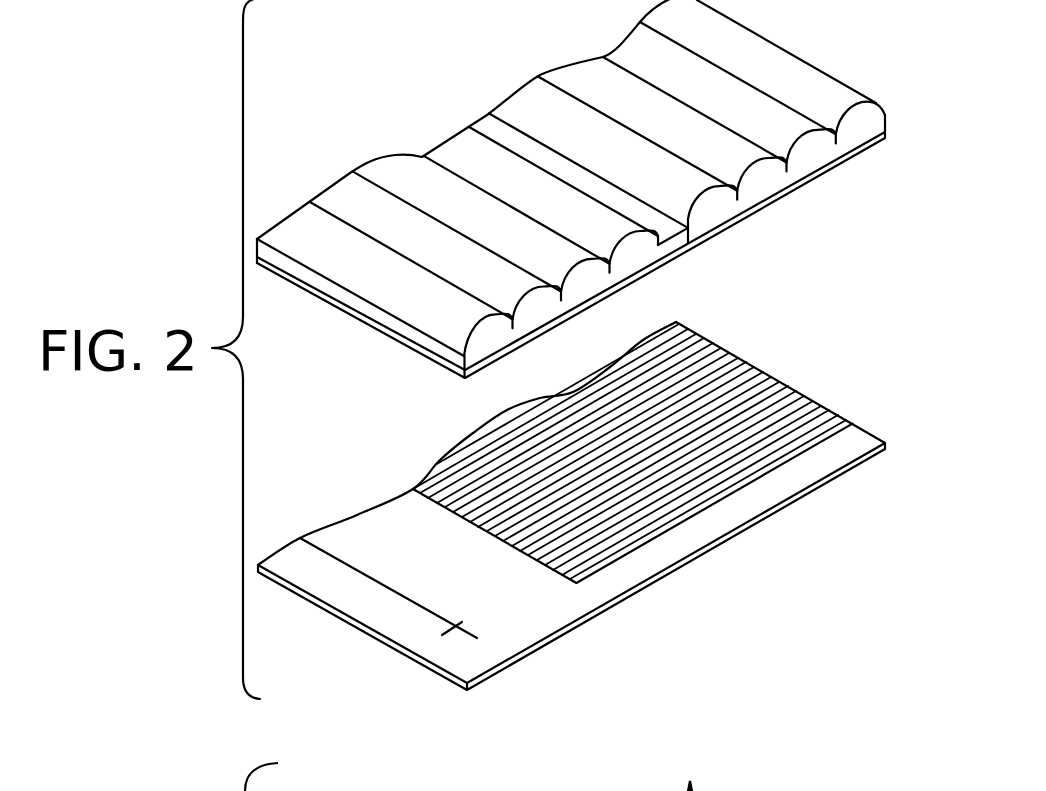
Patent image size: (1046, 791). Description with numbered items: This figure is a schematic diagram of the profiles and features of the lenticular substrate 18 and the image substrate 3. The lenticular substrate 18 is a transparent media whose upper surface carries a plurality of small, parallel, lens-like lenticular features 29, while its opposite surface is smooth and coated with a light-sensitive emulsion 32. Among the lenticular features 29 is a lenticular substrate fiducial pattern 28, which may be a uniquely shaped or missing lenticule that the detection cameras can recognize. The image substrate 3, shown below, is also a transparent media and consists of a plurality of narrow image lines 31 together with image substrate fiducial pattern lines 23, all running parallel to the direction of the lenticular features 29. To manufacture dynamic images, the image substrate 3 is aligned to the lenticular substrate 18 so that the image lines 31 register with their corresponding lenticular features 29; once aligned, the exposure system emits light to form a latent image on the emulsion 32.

The image substrate 3 is at (585, 506).
The lenticular substrate 18 is at (591, 189).
The image substrate fiducial pattern lines 23 is at (454, 630).
The lenticular substrate fiducial pattern 28 is at (690, 243).
The lenticular features 29 is at (809, 74).
The image lines 31 is at (717, 510).
The light-sensitive emulsion 32 is at (776, 200).